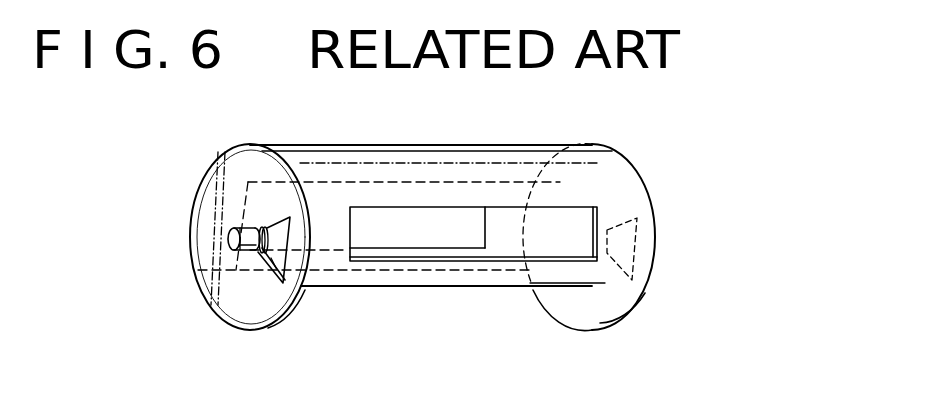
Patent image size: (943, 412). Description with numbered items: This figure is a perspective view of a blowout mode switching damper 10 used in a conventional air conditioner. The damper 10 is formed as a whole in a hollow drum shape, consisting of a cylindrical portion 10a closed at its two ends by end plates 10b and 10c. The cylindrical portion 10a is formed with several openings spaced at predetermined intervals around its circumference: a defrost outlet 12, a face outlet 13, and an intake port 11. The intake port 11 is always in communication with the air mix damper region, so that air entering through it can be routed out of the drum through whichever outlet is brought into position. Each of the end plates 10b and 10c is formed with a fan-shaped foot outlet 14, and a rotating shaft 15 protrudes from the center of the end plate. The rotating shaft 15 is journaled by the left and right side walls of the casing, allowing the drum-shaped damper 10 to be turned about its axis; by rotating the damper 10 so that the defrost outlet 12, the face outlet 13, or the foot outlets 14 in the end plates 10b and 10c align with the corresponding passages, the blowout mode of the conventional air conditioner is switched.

The damper 10 is at (616, 141).
The cylindrical portion 10a is at (404, 168).
The end plate 10b is at (203, 297).
The end plate 10c is at (627, 185).
The intake port 11 is at (473, 293).
The defrost outlet 12 is at (505, 222).
The face outlet 13 is at (323, 187).
The foot outlet 14 is at (273, 277).
The rotating shaft 15 is at (230, 235).